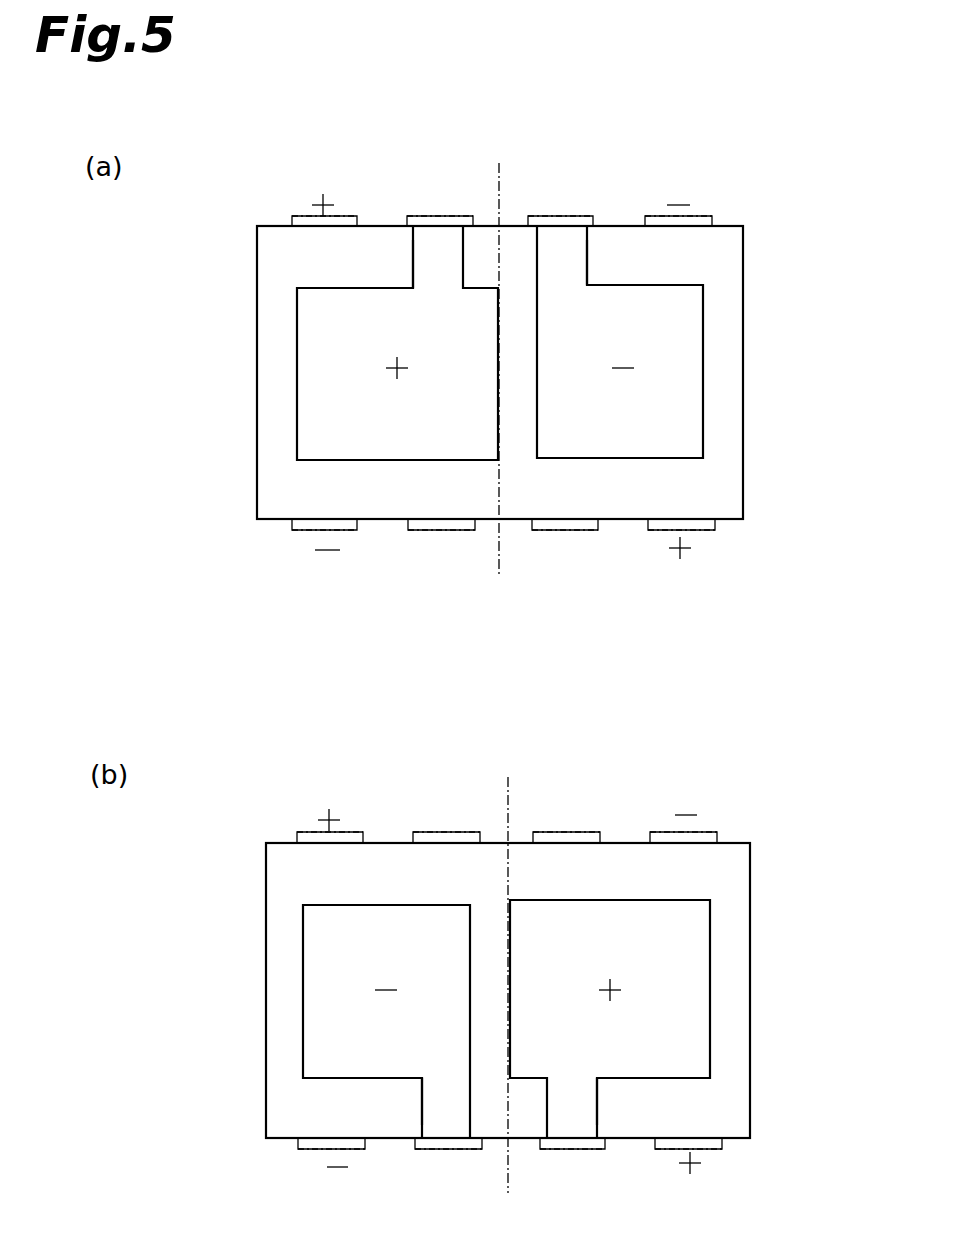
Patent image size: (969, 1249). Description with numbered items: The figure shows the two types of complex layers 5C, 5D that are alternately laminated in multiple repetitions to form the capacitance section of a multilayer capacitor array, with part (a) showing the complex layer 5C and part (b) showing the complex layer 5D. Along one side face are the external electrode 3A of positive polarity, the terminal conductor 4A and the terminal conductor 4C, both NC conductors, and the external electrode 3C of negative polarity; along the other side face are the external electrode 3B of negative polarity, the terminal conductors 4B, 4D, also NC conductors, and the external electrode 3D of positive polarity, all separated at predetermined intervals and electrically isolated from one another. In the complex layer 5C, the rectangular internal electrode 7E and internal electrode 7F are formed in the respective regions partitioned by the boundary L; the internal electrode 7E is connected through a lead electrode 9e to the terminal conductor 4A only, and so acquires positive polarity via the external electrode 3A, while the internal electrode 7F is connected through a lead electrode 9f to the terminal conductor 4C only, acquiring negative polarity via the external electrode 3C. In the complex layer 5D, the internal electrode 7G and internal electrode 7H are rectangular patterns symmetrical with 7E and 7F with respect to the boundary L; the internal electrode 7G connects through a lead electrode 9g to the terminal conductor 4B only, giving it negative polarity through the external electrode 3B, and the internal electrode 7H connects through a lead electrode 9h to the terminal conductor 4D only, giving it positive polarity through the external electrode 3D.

The complex layer 5C is at (812, 185).
The complex layer 5D is at (820, 800).
The external electrode 3A is at (302, 213).
The external electrode 3B is at (306, 533).
The external electrode 3C is at (697, 212).
The external electrode 3D is at (698, 533).
The terminal conductor 4A is at (420, 829).
The terminal conductor 4B is at (422, 1198).
The terminal conductor 4C is at (587, 213).
The terminal conductor 4D is at (585, 533).
The internal electrode 7E is at (315, 365).
The internal electrode 7F is at (685, 359).
The internal electrode 7G is at (323, 1002).
The internal electrode 7H is at (695, 995).
The lead electrode 9e is at (418, 258).
The lead electrode 9f is at (577, 255).
The lead electrode 9g is at (430, 1105).
The lead electrode 9h is at (592, 1103).
The boundary L is at (502, 563).